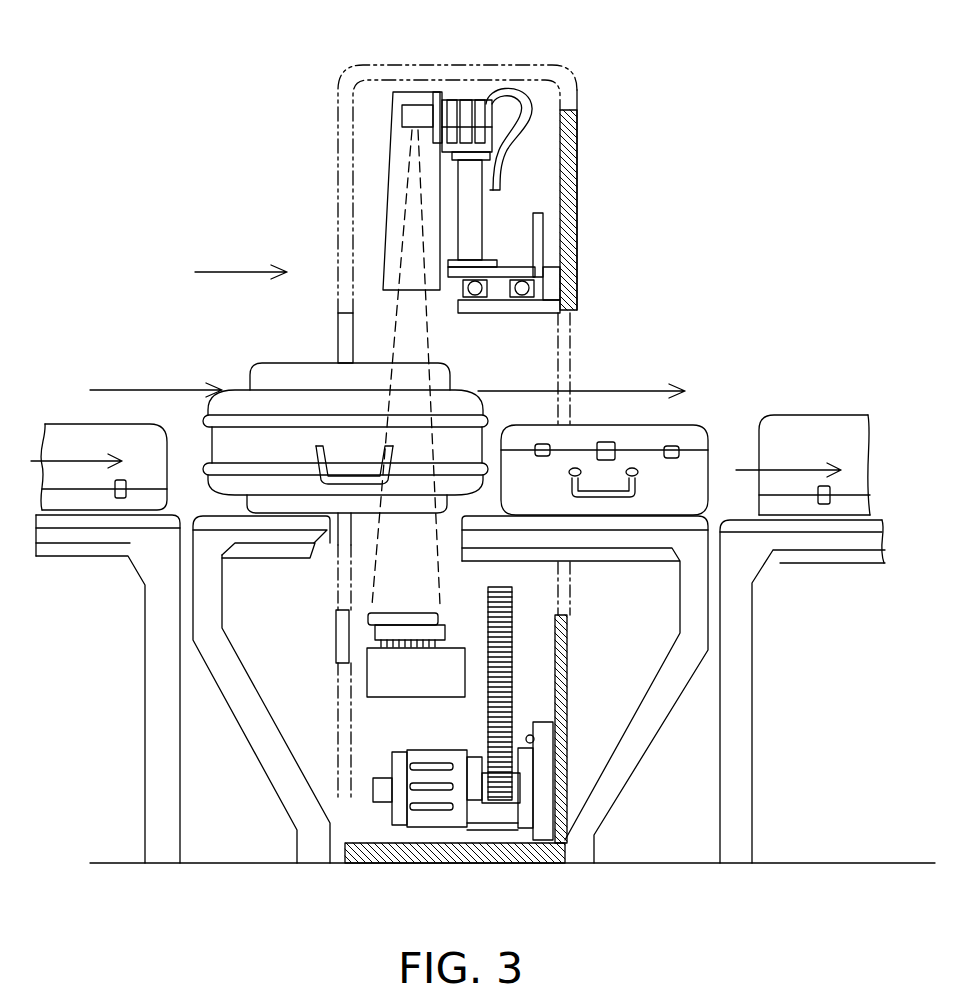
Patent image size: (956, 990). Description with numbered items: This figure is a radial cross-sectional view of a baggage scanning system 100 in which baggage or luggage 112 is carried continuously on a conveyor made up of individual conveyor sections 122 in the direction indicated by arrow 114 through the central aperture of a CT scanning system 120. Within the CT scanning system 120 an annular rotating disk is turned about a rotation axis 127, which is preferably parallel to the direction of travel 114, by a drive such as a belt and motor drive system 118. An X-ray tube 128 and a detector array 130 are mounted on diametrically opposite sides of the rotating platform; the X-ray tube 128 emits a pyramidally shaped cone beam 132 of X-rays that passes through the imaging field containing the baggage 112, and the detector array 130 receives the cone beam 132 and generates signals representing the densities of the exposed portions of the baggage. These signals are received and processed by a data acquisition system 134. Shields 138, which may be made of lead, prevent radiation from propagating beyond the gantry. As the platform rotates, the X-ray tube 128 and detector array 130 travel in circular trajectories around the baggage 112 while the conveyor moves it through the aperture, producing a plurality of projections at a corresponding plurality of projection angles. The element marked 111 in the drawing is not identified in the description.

The baggage scanning system 100 is at (742, 923).
The lead screw rack 111 is at (513, 682).
The baggage or luggage 112 is at (298, 363).
The direction of travel arrow 114 is at (232, 273).
The motor drive system 118 is at (456, 830).
The CT scanning system 120 is at (420, 62).
The conveyor sections 122 is at (752, 684).
The rotation axis 127 is at (147, 388).
The X-ray tube 128 is at (466, 103).
The detector array 130 is at (391, 612).
The cone beam 132 is at (430, 348).
The data acquisition system 134 is at (372, 698).
The shields 138 is at (377, 630).